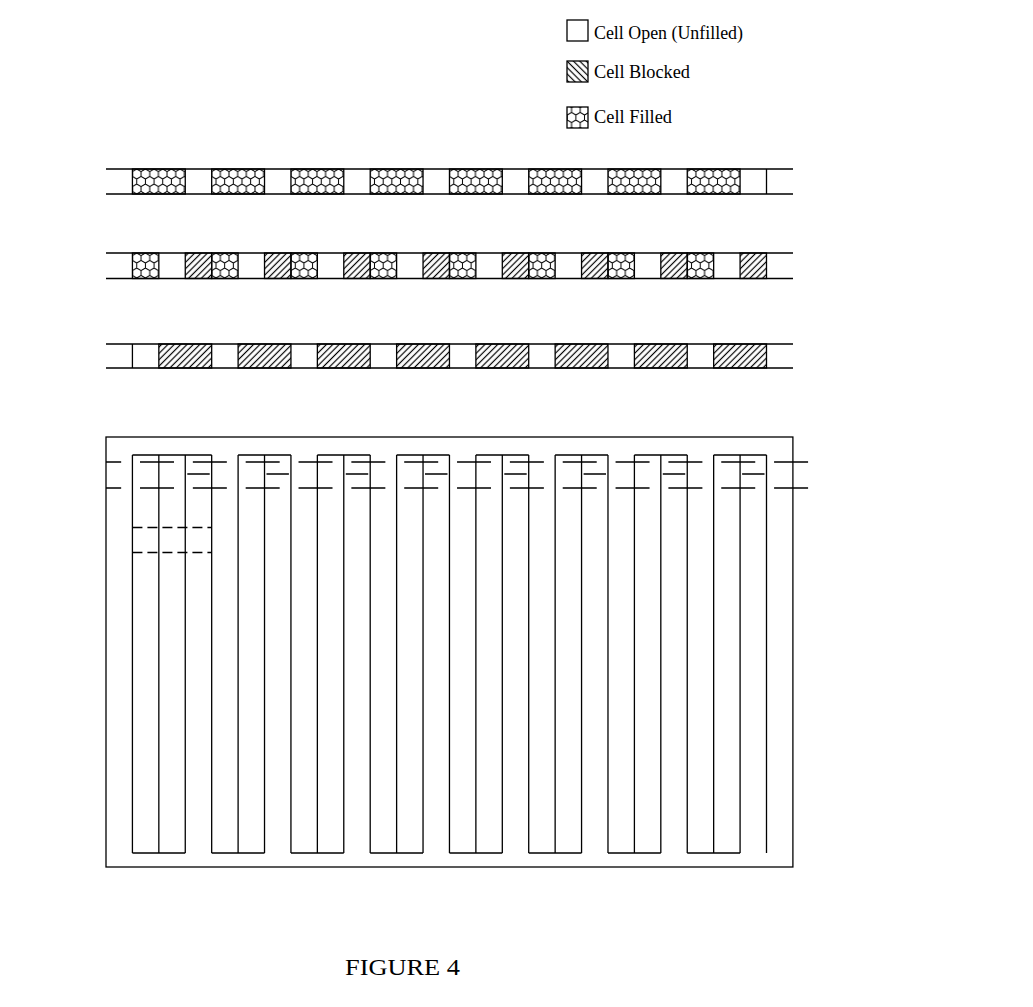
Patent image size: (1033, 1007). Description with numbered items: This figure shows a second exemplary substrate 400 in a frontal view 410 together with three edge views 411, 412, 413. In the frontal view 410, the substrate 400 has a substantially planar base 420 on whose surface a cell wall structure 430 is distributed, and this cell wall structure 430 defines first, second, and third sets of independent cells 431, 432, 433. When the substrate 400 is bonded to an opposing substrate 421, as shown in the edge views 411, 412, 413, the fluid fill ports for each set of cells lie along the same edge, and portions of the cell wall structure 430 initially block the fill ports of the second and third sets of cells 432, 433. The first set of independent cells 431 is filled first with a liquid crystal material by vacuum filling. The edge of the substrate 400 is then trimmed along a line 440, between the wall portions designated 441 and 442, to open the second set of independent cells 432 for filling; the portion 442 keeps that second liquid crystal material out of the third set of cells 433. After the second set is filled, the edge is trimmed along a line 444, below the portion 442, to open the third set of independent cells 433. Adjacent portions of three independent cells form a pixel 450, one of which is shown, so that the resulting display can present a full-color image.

The substrate 400 is at (792, 566).
The frontal view 410 is at (802, 437).
The edge view 411 is at (801, 343).
The edge view 412 is at (801, 256).
The edge view 413 is at (801, 171).
The base 420 is at (120, 171).
The opposing substrate 421 is at (120, 194).
The cell wall structure 430 is at (128, 365).
The first set of independent cells 431 is at (151, 360).
The second set of independent cells 432 is at (178, 268).
The third set of independent cells 433 is at (201, 187).
The line 440 is at (487, 463).
The portion of the cell wall structure 441 is at (265, 454).
The portion of the cell wall structure 442 is at (279, 473).
The line 444 is at (487, 487).
The pixel 450 is at (147, 554).